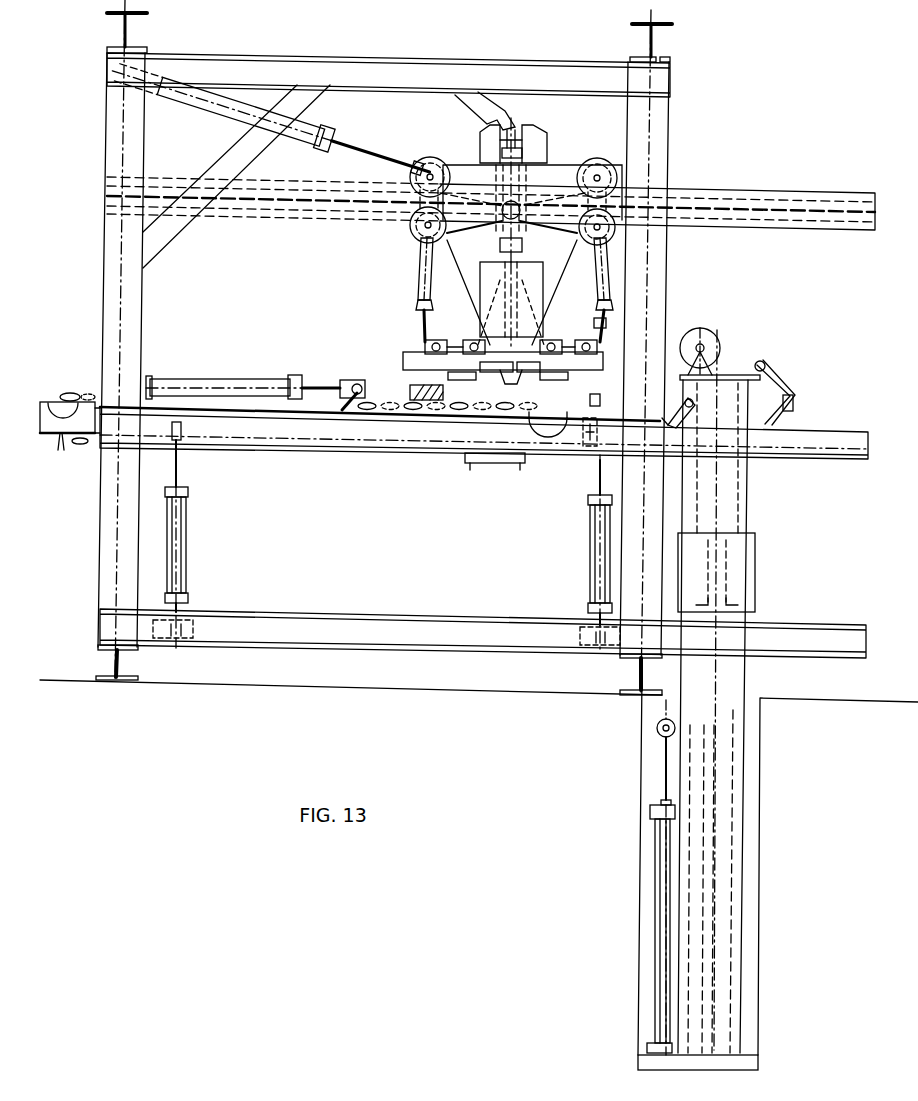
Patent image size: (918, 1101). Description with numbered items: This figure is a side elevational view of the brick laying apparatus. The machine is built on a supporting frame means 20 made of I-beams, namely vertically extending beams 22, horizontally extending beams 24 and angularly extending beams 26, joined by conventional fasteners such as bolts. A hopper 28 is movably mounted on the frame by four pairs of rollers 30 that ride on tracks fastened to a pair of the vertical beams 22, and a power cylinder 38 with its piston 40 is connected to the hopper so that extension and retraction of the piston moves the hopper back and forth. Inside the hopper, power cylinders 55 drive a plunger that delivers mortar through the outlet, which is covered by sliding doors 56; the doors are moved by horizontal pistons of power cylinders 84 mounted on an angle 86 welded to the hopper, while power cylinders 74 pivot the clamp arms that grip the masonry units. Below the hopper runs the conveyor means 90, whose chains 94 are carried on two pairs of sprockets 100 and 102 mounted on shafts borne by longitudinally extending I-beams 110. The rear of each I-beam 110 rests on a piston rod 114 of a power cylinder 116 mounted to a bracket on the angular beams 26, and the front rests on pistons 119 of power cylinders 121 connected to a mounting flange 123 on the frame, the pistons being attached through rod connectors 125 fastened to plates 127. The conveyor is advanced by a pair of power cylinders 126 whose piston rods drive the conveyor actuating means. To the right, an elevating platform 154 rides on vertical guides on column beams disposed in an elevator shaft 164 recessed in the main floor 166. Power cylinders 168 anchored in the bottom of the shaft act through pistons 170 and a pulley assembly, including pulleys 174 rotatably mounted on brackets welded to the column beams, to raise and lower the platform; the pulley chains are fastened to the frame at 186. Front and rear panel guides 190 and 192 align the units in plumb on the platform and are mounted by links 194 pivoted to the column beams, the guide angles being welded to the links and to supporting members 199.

The supporting frame means 20 is at (272, 52).
The vertically extending beams 22 is at (142, 294).
The horizontally extending beams 24 is at (135, 43).
The angularly extending beams 26 is at (228, 155).
The hopper 28 is at (487, 264).
The rollers 30 is at (437, 158).
The power cylinder 38 is at (218, 108).
The piston 40 is at (370, 150).
The power cylinders 55 is at (503, 154).
The sliding doors 56 is at (508, 380).
The power cylinders 74 is at (418, 252).
The power cylinders 84 is at (412, 355).
The angle 86 is at (598, 326).
The conveyor means 90 is at (300, 456).
The chains 94 is at (70, 393).
The sprockets 100 is at (64, 442).
The sprockets 102 is at (556, 444).
The longitudinally extending I-beams 110 is at (45, 400).
The piston rod 114 is at (180, 470).
The power cylinders 116 is at (182, 534).
The pistons 119 is at (598, 478).
The power cylinders 121 is at (596, 556).
The mounting flange 123 is at (580, 635).
The rod connectors 125 is at (597, 402).
The power cylinders 126 is at (226, 384).
The plates 127 is at (590, 452).
The elevating platform 154 is at (724, 574).
The elevator shaft 164 is at (760, 815).
The main floor 166 is at (410, 690).
The power cylinders 168 is at (656, 903).
The pistons 170 is at (662, 764).
The pulleys 174 is at (712, 334).
The chain anchor point 186 is at (668, 60).
The front panel guide 190 is at (752, 476).
The rear panel guide 192 is at (700, 495).
The links 194 is at (774, 390).
The supporting members 199 is at (672, 402).